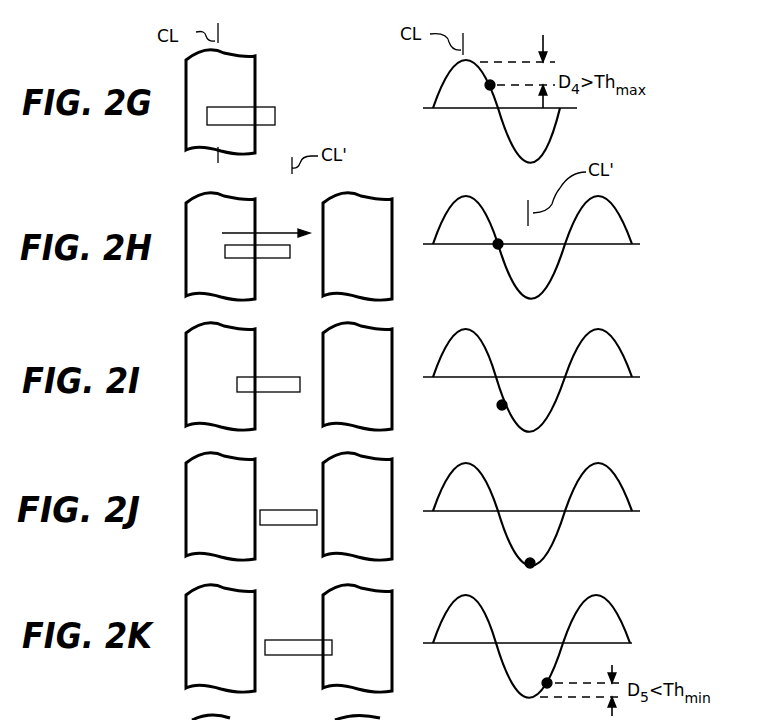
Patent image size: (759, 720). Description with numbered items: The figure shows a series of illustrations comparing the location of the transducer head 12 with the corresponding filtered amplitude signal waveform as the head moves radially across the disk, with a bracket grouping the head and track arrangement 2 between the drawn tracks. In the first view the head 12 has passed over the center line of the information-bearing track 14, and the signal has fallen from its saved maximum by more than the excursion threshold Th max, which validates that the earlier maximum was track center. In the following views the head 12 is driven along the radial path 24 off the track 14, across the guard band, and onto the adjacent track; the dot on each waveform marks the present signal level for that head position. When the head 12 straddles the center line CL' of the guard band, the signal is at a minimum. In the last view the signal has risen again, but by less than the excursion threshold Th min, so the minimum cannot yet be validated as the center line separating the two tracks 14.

The sensor assembly 2 is at (317, 302).
The transducer head 12 is at (262, 260).
The information-bearing track 14 is at (187, 220).
The radial path 24 is at (275, 231).